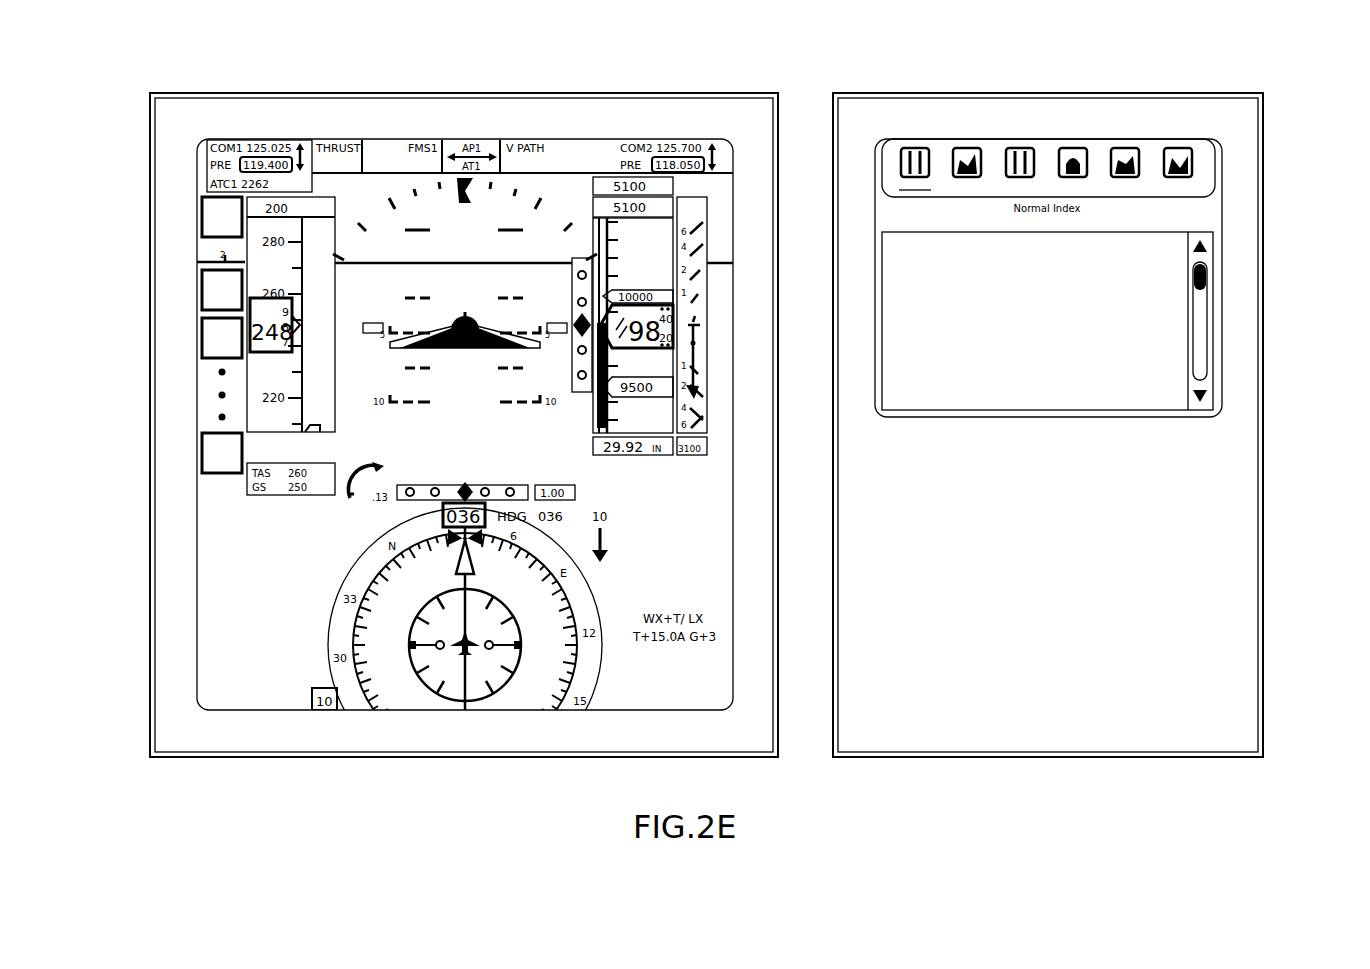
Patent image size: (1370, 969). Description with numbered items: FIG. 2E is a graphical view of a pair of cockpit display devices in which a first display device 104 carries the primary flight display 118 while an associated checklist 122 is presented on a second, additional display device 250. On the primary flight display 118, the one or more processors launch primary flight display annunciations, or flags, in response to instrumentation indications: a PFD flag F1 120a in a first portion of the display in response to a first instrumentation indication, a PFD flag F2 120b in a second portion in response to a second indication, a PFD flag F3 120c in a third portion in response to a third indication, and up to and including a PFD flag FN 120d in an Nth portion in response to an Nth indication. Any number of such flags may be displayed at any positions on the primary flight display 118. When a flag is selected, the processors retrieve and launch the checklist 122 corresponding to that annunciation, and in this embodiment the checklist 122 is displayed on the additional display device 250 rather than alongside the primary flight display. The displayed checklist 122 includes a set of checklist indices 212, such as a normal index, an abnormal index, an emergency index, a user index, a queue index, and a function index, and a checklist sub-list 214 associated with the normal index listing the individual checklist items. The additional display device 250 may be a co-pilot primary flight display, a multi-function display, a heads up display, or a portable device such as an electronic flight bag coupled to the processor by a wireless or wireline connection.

The display device 104 is at (186, 93).
The additional display device 250 is at (869, 93).
The primary flight display 118 is at (215, 572).
The PFD flag F1 120a is at (200, 218).
The PFD flag F2 120b is at (200, 290).
The PFD flag F3 120c is at (200, 337).
The PFD flag FN 120d is at (200, 452).
The checklist 122 is at (1047, 417).
The checklist indices 212 is at (1216, 163).
The checklist sub-list 214 is at (1150, 345).